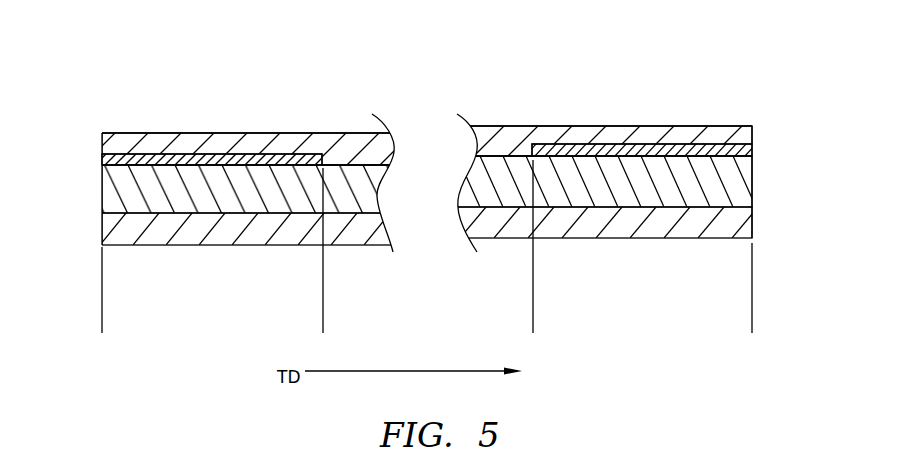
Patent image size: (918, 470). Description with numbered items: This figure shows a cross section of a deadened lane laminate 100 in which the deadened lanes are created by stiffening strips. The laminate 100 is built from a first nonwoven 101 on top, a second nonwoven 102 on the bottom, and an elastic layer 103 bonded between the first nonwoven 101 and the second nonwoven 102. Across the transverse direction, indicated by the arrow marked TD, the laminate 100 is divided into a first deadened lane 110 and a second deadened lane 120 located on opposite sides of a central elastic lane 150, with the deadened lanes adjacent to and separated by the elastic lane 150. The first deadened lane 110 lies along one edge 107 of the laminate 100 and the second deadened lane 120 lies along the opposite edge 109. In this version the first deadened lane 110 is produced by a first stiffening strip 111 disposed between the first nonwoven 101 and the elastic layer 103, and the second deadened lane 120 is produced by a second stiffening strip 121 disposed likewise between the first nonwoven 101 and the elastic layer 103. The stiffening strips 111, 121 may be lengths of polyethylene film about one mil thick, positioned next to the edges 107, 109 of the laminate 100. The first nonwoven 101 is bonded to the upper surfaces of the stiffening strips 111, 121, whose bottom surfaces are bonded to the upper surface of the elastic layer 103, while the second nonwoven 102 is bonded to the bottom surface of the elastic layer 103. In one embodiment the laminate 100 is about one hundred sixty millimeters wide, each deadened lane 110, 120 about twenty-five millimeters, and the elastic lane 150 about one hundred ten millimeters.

The deadened lane laminate 100 is at (716, 70).
The first nonwoven 101 is at (147, 140).
The second nonwoven 102 is at (120, 237).
The elastic layer 103 is at (112, 207).
The edge 107 is at (92, 157).
The edge 109 is at (770, 153).
The first deadened lane 110 is at (323, 320).
The first stiffening strip 111 is at (290, 155).
The second deadened lane 120 is at (752, 320).
The second stiffening strip 121 is at (575, 148).
The elastic lane 150 is at (533, 320).